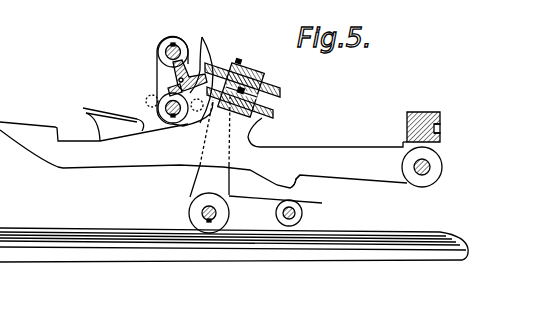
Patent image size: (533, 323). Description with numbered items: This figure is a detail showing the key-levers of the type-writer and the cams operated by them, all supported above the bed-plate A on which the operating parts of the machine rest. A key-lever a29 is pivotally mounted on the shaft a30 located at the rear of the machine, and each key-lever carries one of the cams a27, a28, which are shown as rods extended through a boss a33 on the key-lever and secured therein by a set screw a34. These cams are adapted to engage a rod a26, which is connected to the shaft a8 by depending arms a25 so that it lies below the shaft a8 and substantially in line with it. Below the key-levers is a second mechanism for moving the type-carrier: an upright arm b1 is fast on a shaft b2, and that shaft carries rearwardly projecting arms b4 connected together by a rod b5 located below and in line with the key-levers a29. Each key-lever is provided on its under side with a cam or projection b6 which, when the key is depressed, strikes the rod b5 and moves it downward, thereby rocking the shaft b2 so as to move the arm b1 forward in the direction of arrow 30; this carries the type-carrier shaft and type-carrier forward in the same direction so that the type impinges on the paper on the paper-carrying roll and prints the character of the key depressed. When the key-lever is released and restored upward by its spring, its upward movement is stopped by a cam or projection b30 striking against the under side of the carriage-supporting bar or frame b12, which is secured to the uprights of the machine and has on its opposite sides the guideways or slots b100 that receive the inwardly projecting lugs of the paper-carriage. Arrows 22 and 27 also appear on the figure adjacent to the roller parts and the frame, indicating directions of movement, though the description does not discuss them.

The direction arrow 22 is at (170, 24).
The arrow 30 is at (238, 15).
The direction arrow 27 is at (156, 115).
The upright arm b1 is at (211, 38).
The cam a27 is at (215, 63).
The boss a33 is at (260, 78).
The set screw a34 is at (248, 64).
The shaft a8 is at (163, 50).
The depending arms a25 is at (157, 72).
The cam a28 is at (172, 80).
The rod a26 is at (160, 100).
The key-lever a29 is at (317, 147).
The cam or projection b30 is at (403, 142).
The bar or frame b12 is at (430, 113).
The guideways or slots b100 is at (440, 129).
The shaft a30 is at (430, 167).
The shaft b2 is at (200, 210).
The rearwardly projecting arms b4 is at (260, 220).
The rod b5 is at (302, 212).
The cam or projection b6 is at (297, 187).
The bed-plate A is at (447, 234).